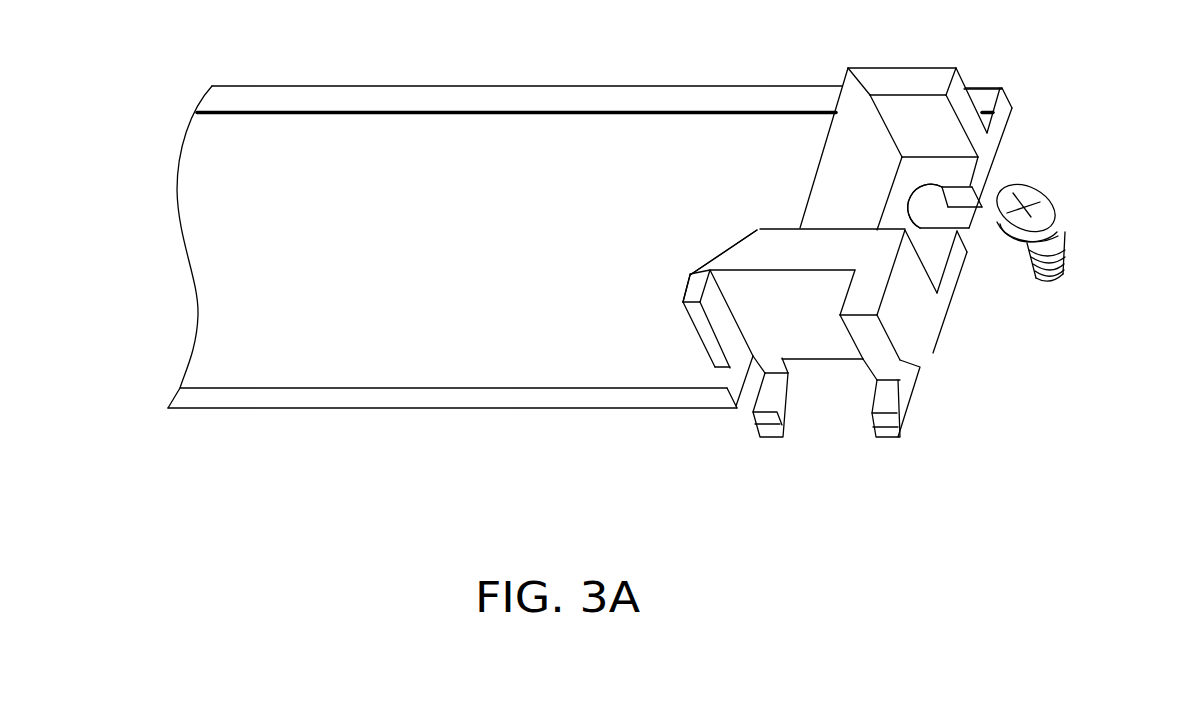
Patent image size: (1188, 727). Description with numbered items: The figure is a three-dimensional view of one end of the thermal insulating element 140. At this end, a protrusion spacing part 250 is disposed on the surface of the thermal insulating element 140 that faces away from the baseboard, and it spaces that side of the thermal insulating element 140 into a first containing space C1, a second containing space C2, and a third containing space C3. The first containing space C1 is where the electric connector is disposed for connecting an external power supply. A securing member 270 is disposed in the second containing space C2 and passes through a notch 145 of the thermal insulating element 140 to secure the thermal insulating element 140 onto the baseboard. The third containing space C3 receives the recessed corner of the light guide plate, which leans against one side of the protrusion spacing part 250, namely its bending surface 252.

The thermal insulating element 140 is at (405, 380).
The protrusion spacing part 250 is at (845, 125).
The bending surface 252 is at (763, 226).
The notch 145 is at (934, 199).
The securing member 270 is at (1052, 201).
The first containing space C1 is at (802, 303).
The second containing space C2 is at (915, 172).
The third containing space C3 is at (782, 183).